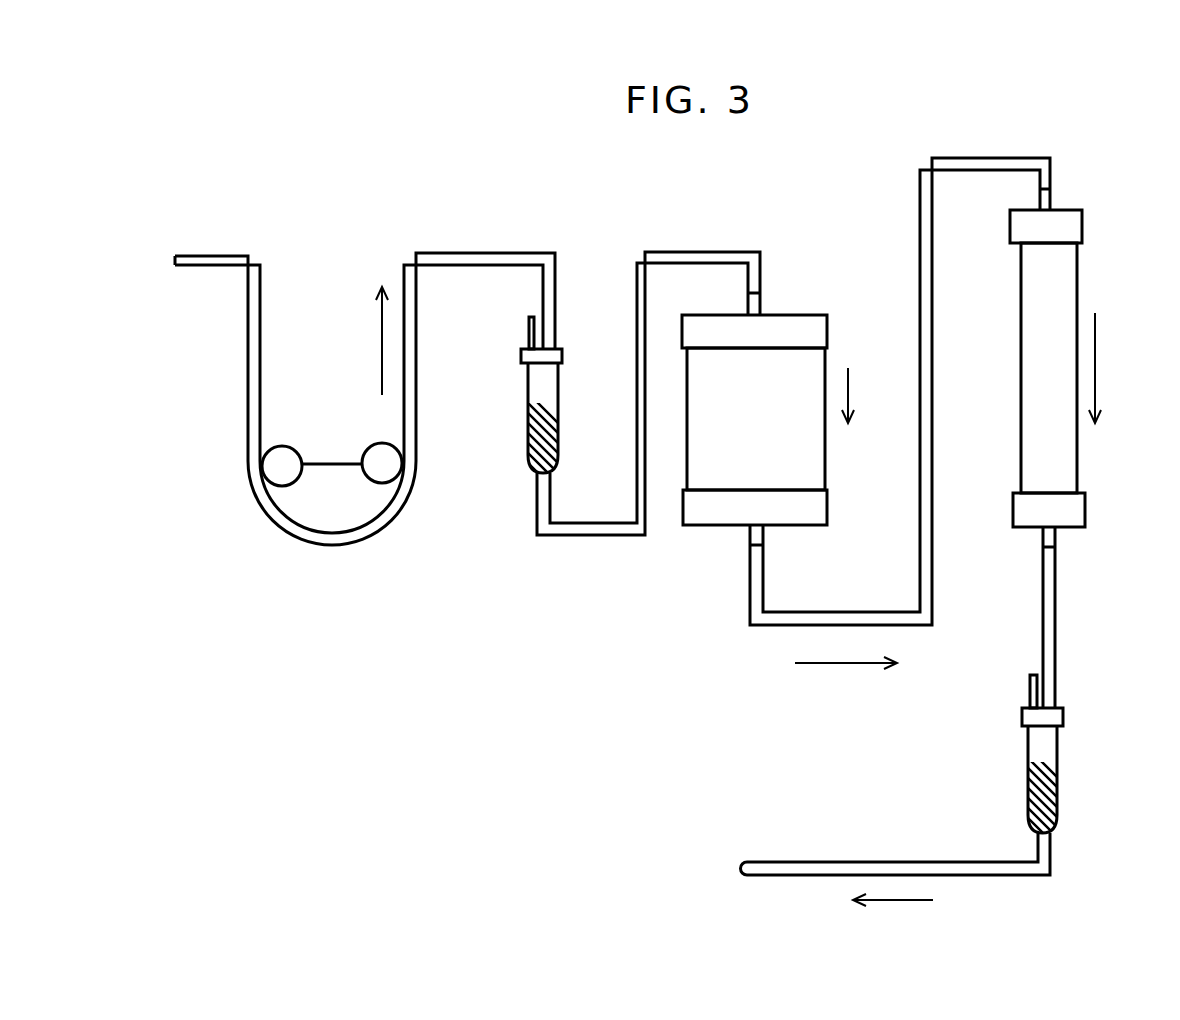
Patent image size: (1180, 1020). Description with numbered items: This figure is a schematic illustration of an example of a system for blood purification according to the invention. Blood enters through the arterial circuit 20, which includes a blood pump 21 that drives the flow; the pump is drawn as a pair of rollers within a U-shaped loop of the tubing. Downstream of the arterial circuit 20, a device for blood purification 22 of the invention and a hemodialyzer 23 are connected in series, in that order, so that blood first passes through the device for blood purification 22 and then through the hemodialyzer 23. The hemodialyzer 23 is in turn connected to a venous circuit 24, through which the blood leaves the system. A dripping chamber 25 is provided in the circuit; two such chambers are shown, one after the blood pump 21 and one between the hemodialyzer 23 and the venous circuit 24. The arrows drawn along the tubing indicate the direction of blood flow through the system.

The arterial circuit 20 is at (483, 243).
The blood pump 21 is at (282, 543).
The device for blood purification 22 is at (823, 308).
The hemodialyzer 23 is at (1088, 207).
The venous circuit 24 is at (827, 853).
The dripping chamber 25 is at (527, 417).